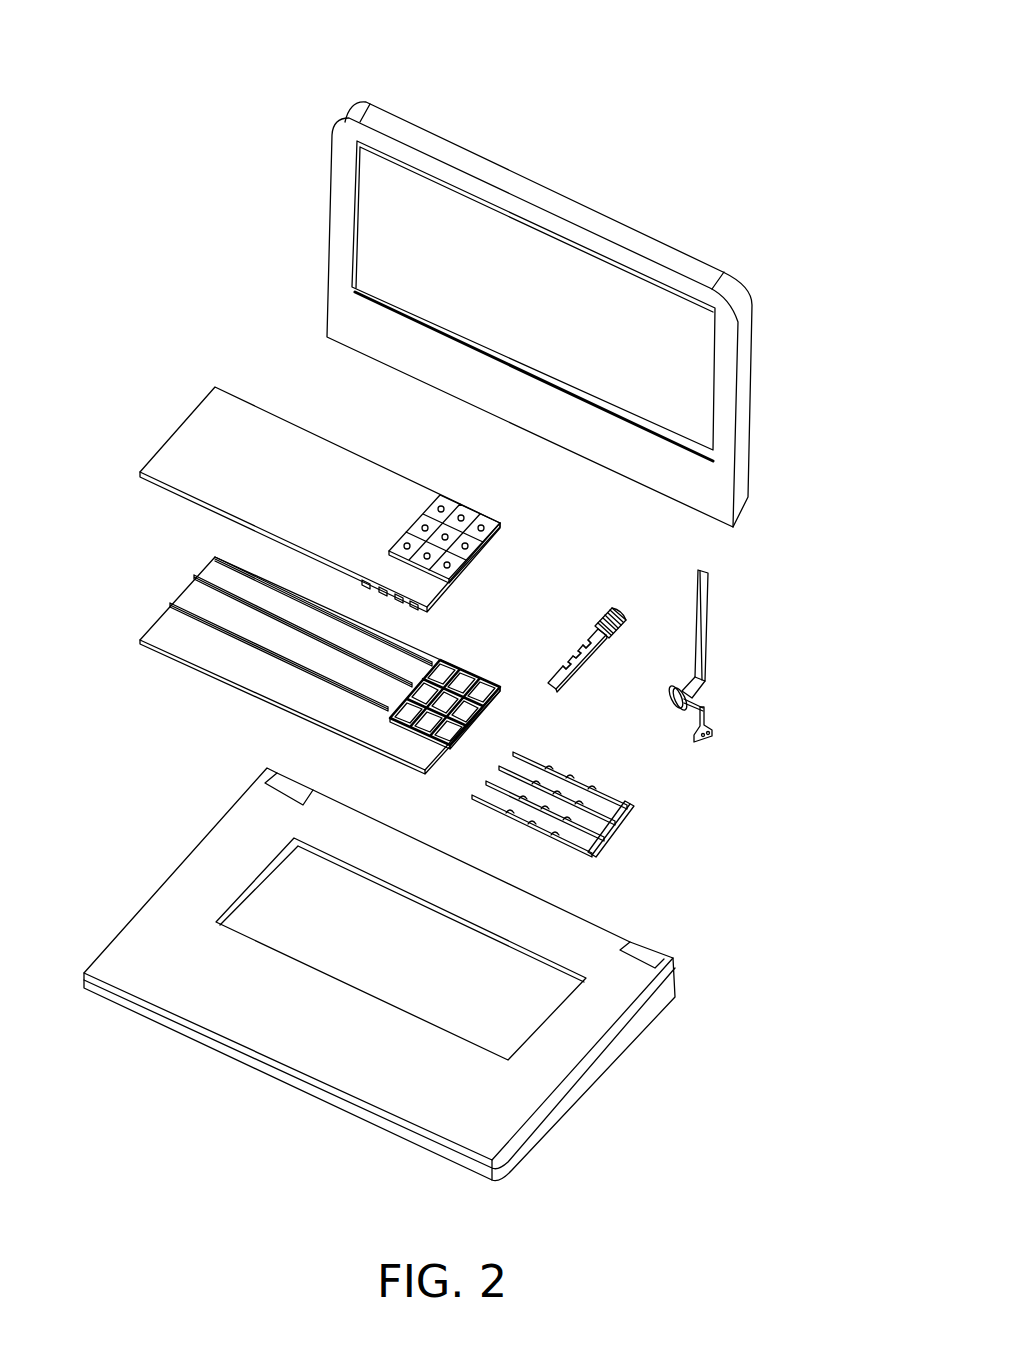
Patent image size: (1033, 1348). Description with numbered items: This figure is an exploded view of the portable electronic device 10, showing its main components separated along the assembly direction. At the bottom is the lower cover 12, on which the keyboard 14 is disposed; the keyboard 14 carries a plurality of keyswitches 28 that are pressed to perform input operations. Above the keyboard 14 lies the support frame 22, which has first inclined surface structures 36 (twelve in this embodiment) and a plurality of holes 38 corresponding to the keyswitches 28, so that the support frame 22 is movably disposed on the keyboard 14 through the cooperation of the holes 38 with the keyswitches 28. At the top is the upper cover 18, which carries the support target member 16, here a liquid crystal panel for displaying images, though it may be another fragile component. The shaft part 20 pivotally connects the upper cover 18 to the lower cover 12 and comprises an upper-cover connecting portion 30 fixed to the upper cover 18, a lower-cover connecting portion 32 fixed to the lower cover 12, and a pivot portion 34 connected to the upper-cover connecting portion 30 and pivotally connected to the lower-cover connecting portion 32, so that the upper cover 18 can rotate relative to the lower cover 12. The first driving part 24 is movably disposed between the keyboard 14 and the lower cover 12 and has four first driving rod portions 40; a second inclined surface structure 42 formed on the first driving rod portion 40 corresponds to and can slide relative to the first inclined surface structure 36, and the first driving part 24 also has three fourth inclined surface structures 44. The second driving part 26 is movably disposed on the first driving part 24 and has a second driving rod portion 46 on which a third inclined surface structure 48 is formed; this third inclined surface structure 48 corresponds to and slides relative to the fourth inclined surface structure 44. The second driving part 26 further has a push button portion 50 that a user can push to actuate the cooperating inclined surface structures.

The portable electronic device 10 is at (245, 100).
The lower cover 12 is at (148, 905).
The keyboard 14 is at (160, 603).
The support target member 16 is at (648, 352).
The upper cover 18 is at (724, 354).
The shaft part 20 is at (797, 588).
The support frame 22 is at (172, 422).
The first driving part 24 is at (615, 843).
The second driving part 26 is at (606, 603).
The keyswitches 28 is at (482, 688).
The upper-cover connecting portion 30 is at (704, 632).
The lower-cover connecting portion 32 is at (707, 704).
The pivot portion 34 is at (673, 710).
The first inclined surface structure 36 is at (451, 494).
The holes 38 is at (465, 515).
The first driving rod portion 40 is at (526, 748).
The second inclined surface structure 42 is at (571, 778).
The fourth inclined surface structure 44 is at (634, 817).
The second driving rod portion 46 is at (569, 663).
The third inclined surface structure 48 is at (590, 663).
The push button portion 50 is at (613, 607).